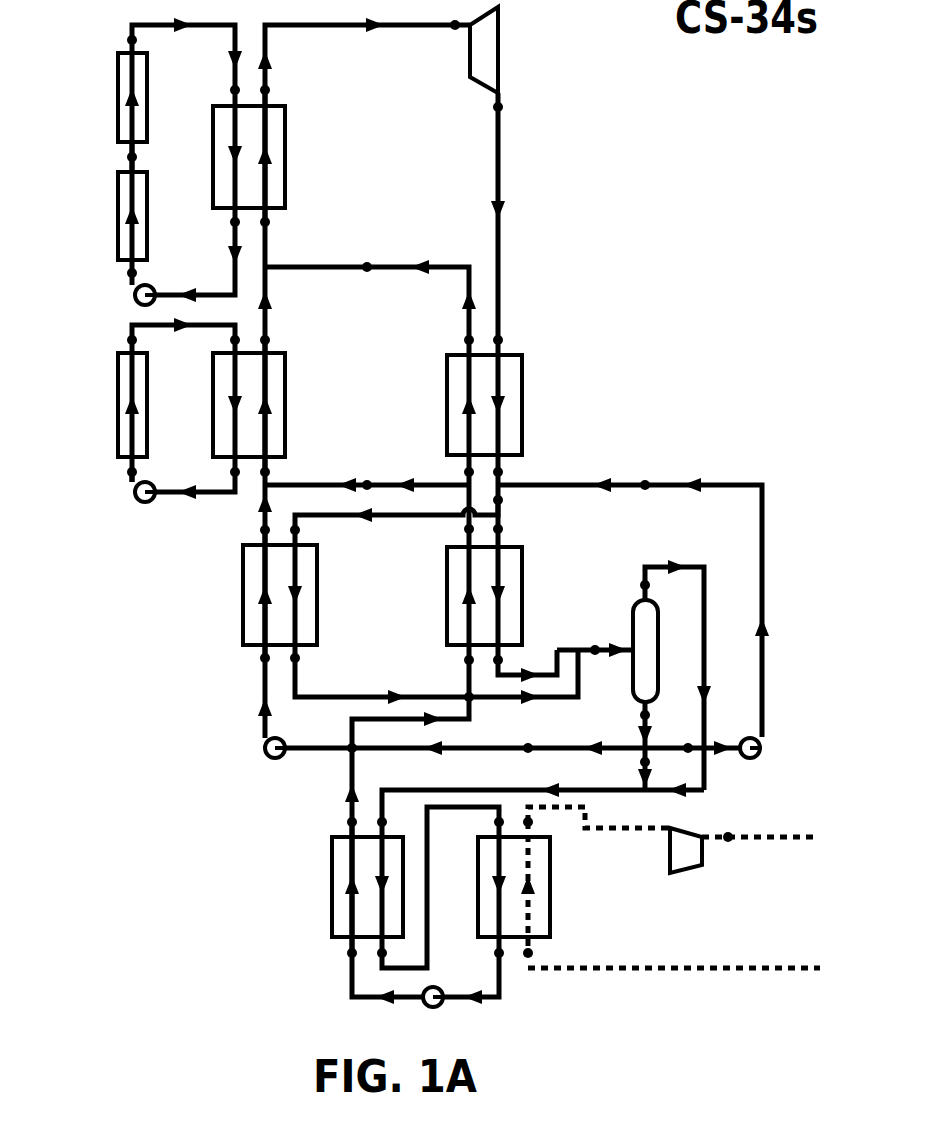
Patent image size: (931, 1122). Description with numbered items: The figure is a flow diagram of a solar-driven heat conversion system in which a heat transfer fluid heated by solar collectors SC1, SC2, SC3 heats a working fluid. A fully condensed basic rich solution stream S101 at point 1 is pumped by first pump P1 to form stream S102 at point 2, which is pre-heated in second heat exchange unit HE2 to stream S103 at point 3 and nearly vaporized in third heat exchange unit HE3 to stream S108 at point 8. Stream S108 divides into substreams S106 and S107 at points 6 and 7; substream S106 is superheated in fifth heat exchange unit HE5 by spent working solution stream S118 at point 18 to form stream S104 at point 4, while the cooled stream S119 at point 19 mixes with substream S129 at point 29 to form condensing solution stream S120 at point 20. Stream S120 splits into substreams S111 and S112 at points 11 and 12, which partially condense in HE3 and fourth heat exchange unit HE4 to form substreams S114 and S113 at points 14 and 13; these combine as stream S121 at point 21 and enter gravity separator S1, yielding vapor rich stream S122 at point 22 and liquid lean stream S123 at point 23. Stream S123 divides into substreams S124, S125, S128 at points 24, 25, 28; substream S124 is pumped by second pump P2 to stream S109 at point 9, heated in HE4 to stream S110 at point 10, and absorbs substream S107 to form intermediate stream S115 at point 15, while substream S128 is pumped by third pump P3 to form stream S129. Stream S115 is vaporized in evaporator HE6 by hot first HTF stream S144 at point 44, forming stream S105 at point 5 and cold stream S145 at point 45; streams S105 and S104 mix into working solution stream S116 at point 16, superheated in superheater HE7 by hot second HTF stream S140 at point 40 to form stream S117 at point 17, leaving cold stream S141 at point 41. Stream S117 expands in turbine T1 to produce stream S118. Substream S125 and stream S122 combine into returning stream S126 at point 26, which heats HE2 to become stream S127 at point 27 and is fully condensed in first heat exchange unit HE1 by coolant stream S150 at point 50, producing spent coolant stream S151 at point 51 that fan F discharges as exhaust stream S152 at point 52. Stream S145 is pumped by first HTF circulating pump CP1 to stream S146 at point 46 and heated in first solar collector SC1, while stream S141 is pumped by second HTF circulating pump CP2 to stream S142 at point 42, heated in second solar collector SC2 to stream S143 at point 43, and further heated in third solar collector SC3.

The point 1 is at (492, 955).
The point 2 is at (345, 955).
The point 3 is at (403, 743).
The point 4 is at (418, 298).
The point 5 is at (272, 342).
The point 6 is at (462, 474).
The point 7 is at (367, 476).
The point 8 is at (462, 531).
The point 9 is at (258, 660).
The point 10 is at (252, 532).
The point 11 is at (511, 531).
The point 12 is at (307, 532).
The point 13 is at (307, 660).
The point 14 is at (511, 662).
The point 15 is at (278, 474).
The point 16 is at (278, 224).
The point 17 is at (362, 53).
The point 18 is at (499, 225).
The point 19 is at (511, 474).
The point 20 is at (511, 502).
The point 21 is at (595, 660).
The point 22 is at (658, 586).
The point 23 is at (632, 717).
The point 24 is at (528, 739).
The point 25 is at (632, 765).
The point 26 is at (395, 824).
The point 27 is at (440, 889).
The point 28 is at (688, 759).
The point 29 is at (645, 495).
The point 40 is at (170, 67).
The point 41 is at (222, 224).
The point 42 is at (119, 275).
The point 43 is at (119, 159).
The point 44 is at (170, 342).
The point 45 is at (222, 474).
The point 46 is at (119, 474).
The point 50 is at (541, 955).
The point 51 is at (541, 824).
The point 52 is at (728, 847).
The fully condensed basic rich solution stream S101 is at (497, 998).
The higher pressure fully condensed basic rich solution stream S102 is at (345, 975).
The pre-heated higher pressure basic rich solution stream S103 is at (345, 780).
The fully and superheated higher pressure basic rich solution stream S104 is at (403, 262).
The heated intermediate solution stream S105 is at (272, 322).
The first vaporized higher pressure basic rich solution substream S106 is at (462, 480).
The second vaporized higher pressure basic rich solution substream S107 is at (340, 480).
The vaporized higher pressure basic rich solution stream S108 is at (462, 545).
The higher pressure first lean solution substream S109 is at (258, 675).
The heated higher pressure first lean solution substream S110 is at (258, 538).
The first condensing solution substream S111 is at (505, 542).
The second condensing solution substream S112 is at (430, 522).
The cooled second condensing solution substream S113 is at (335, 690).
The cooled first condensing solution substream S114 is at (510, 650).
The intermediate solution stream S115 is at (275, 478).
The working solution stream S116 is at (275, 243).
The fully vaporized and superheated working solution stream S117 is at (382, 28).
The spent working solution stream S118 is at (505, 195).
The cooled spent working solution stream S119 is at (505, 482).
The condensing solution stream S120 is at (505, 512).
The combined cooled condensing solution stream S121 is at (605, 640).
The saturated vapor rich solution stream S122 is at (708, 625).
The saturated liquid lean solution stream S123 is at (640, 742).
The first lean solution substream S124 is at (470, 760).
The second lean solution substream S125 is at (640, 768).
The basic rich solution stream S126 is at (480, 784).
The partially condensed basic rich solution stream S127 is at (432, 920).
The third lean solution substream S128 is at (665, 752).
The higher pressure third lean solution substream S129 is at (758, 552).
The hot second HTF stream S140 is at (230, 72).
The cold second HTF stream S141 is at (228, 238).
The higher pressure cold second HTF stream S142 is at (130, 265).
The heated higher pressure second HTF stream S143 is at (130, 165).
The hot first HTF stream S144 is at (128, 350).
The cold first HTF stream S145 is at (230, 482).
The higher pressure cold first HTF stream S146 is at (130, 485).
The coolant stream S150 is at (645, 972).
The spent coolant stream S151 is at (600, 835).
The exhaust coolant stream S152 is at (752, 845).
The first heat exchange unit HE1 is at (538, 887).
The second heat exchange unit HE2 is at (340, 887).
The third heat exchange unit HE3 is at (508, 594).
The fourth heat exchange unit HE4 is at (256, 594).
The fifth heat exchange unit HE5 is at (508, 406).
The sixth heat exchange unit HE6 is at (273, 406).
The seventh heat exchange unit HE7 is at (273, 156).
The first solar collector SC1 is at (109, 411).
The second solar collector SC2 is at (109, 208).
The third solar collector SC3 is at (109, 98).
The first HTF circulating pump CP1 is at (143, 505).
The second HTF circulating pump CP2 is at (125, 295).
The first pump P1 is at (434, 1011).
The second pump P2 is at (259, 749).
The third pump P3 is at (768, 749).
The turbine T1 is at (506, 50).
The gravity separator S1 is at (663, 651).
The fan F is at (686, 850).